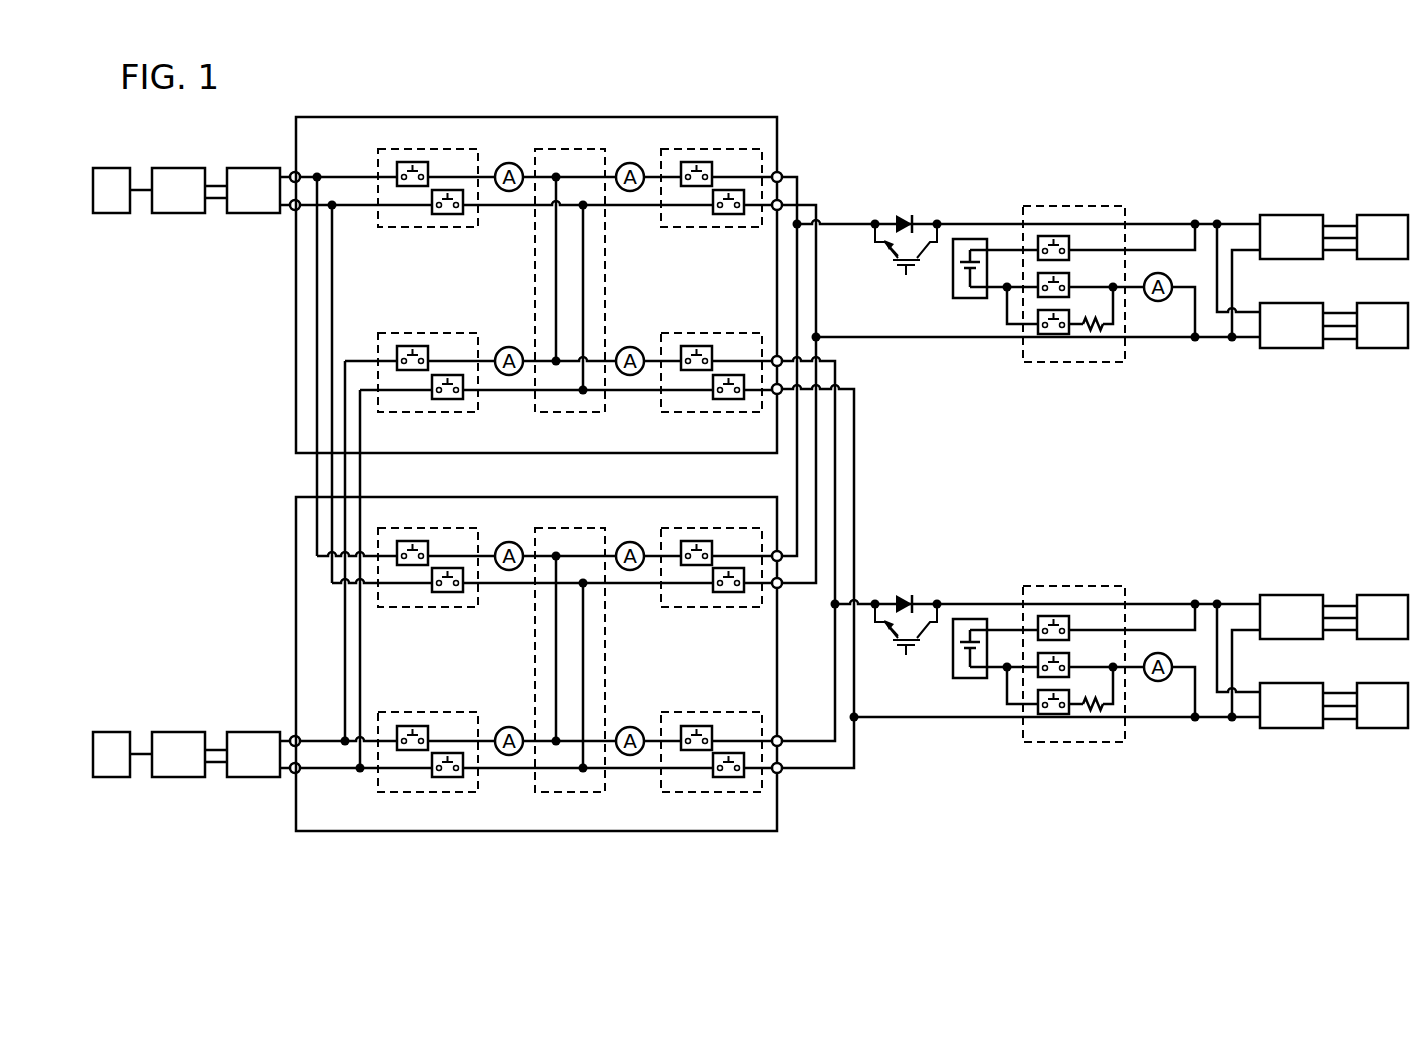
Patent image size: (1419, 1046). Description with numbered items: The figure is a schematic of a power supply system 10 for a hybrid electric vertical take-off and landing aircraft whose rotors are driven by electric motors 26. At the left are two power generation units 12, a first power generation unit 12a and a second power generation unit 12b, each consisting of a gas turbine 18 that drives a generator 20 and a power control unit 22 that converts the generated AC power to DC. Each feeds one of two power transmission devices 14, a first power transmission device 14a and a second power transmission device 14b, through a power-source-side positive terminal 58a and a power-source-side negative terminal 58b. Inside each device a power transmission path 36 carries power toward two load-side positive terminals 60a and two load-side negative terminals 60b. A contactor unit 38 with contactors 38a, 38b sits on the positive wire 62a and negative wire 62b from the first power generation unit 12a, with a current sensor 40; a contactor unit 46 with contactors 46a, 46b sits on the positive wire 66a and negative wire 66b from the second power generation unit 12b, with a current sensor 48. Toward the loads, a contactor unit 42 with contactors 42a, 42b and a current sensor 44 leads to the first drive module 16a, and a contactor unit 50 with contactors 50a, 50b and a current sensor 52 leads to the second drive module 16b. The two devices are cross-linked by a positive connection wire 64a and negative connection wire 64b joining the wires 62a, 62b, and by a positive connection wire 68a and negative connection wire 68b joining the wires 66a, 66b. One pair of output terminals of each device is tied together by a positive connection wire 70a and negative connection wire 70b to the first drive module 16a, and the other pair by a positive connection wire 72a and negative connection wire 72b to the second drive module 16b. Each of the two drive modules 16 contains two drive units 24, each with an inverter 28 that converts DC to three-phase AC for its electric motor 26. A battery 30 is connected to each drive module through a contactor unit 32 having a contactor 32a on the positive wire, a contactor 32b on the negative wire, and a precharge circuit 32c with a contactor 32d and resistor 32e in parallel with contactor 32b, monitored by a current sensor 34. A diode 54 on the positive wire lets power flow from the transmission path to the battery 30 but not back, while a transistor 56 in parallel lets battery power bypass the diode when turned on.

The power supply system 10 is at (651, 99).
The power generation unit 12 is at (192, 449).
The first power generation unit 12a is at (200, 236).
The second power generation unit 12b is at (252, 732).
The power transmission device 14 is at (461, 474).
The first power transmission device 14a is at (283, 384).
The second power transmission device 14b is at (283, 524).
The drive module 16 is at (1231, 411).
The first drive module 16a is at (1276, 158).
The second drive module 16b is at (1276, 538).
The gas turbine 18 is at (112, 168).
The generator 20 is at (178, 168).
The power control unit 22 is at (252, 168).
The drive unit 24 is at (1334, 471).
The electric motor 26 is at (1381, 215).
The inverter 28 is at (1290, 215).
The battery 30 is at (953, 280).
The contactor unit 32 is at (1018, 192).
The contactor 32a is at (1052, 236).
The contactor 32b is at (1036, 289).
The precharge circuit 32c is at (1040, 365).
The contactor 32d is at (1055, 338).
The resistor 32e is at (1100, 336).
The current sensor 34 is at (1158, 272).
The power transmission path 36 is at (556, 414).
The contactor unit 38 is at (405, 232).
The contactor 38a is at (411, 162).
The contactor 38b is at (441, 214).
The current sensor 40 is at (508, 192).
The contactor unit 42 is at (689, 232).
The contactor 42a is at (696, 162).
The contactor 42b is at (722, 214).
The current sensor 44 is at (630, 192).
The contactor unit 46 is at (405, 417).
The contactor 46a is at (411, 346).
The contactor 46b is at (441, 399).
The current sensor 48 is at (508, 376).
The contactor unit 50 is at (689, 417).
The contactor 50a is at (696, 346).
The contactor 50b is at (722, 399).
The current sensor 52 is at (630, 376).
The diode 54 is at (906, 218).
The transistor 56 is at (906, 276).
The power-source-side positive terminal 58a is at (292, 172).
The power-source-side negative terminal 58b is at (292, 210).
The load-side positive terminal 60a is at (782, 174).
The load-side negative terminal 60b is at (783, 204).
The positive wire 62a is at (355, 177).
The negative wire 62b is at (355, 208).
The positive connection wire 64a is at (317, 296).
The negative connection wire 64b is at (332, 337).
The positive wire 66a is at (349, 358).
The negative wire 66b is at (360, 392).
The positive connection wire 68a is at (345, 610).
The negative connection wire 68b is at (360, 670).
The positive connection wire 70a is at (797, 280).
The negative connection wire 70b is at (816, 322).
The positive connection wire 72a is at (835, 494).
The negative connection wire 72b is at (854, 534).